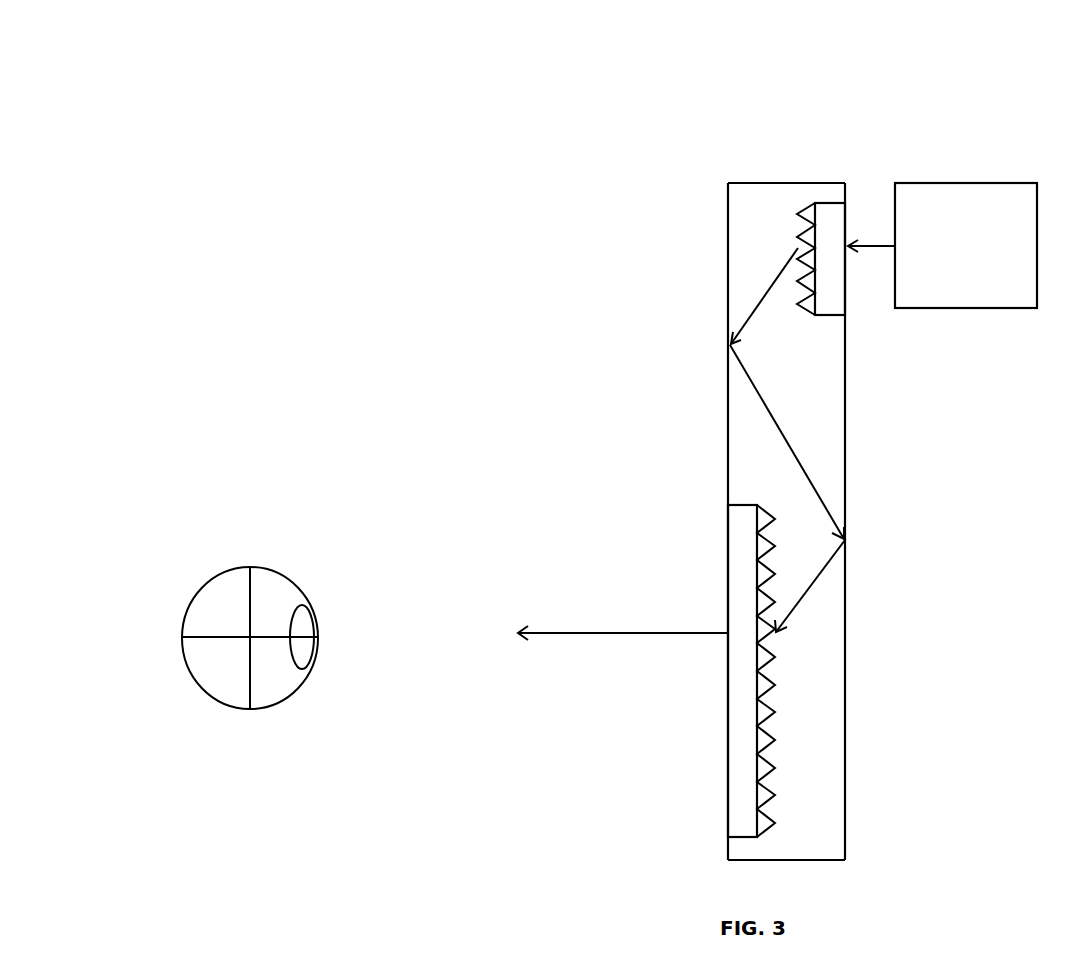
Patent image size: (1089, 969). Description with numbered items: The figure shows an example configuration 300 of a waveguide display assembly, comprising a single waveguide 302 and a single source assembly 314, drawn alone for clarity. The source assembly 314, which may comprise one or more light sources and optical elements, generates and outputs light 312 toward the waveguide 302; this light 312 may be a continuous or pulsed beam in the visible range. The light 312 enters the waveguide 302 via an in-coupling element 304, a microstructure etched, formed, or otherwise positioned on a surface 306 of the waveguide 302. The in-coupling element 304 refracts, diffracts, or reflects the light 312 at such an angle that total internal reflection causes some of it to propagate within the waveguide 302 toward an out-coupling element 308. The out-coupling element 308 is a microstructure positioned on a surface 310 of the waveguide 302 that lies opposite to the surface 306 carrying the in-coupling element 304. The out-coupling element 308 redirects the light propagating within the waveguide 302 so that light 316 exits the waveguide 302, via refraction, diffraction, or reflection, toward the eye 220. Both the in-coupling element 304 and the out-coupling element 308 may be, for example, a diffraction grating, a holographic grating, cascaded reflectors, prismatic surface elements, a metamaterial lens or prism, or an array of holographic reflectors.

The configuration 300 is at (770, 39).
The waveguide 302 is at (748, 211).
The in-coupling element 304 is at (828, 205).
The surface 306 is at (845, 793).
The out-coupling element 308 is at (740, 565).
The surface 310 is at (728, 403).
The light 312 is at (872, 246).
The source assembly 314 is at (947, 287).
The light 316 is at (619, 633).
The eye 220 is at (218, 580).